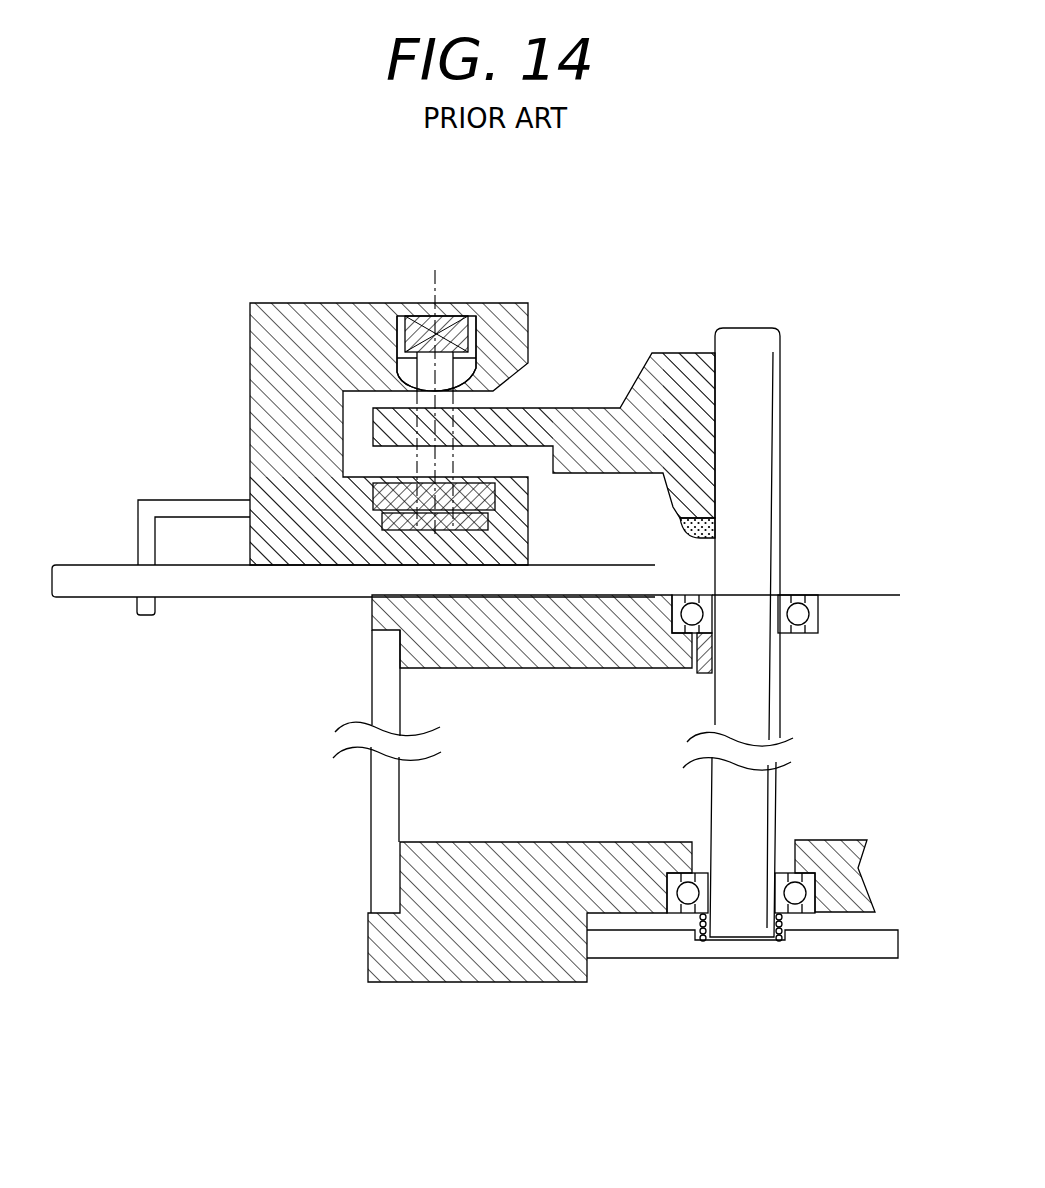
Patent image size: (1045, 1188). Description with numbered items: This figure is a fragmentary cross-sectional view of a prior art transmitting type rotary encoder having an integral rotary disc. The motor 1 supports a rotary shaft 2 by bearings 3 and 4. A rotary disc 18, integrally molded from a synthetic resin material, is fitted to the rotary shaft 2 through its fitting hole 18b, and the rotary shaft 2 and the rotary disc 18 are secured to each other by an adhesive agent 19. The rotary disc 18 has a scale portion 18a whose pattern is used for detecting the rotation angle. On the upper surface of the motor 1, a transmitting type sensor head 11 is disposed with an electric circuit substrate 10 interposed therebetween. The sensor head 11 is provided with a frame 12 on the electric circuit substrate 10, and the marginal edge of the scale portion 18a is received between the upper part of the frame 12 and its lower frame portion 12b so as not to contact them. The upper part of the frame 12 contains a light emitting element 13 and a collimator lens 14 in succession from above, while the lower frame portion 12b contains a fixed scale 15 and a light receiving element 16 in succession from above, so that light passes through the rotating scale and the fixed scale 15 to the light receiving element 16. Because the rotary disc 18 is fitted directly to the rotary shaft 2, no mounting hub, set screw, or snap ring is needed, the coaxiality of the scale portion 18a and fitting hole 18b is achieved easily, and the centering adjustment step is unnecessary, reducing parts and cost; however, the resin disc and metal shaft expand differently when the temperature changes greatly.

The motor 1 is at (366, 955).
The rotary shaft 2 is at (762, 345).
The bearing 3 is at (820, 621).
The bearing 4 is at (858, 888).
The electric circuit substrate 10 is at (90, 585).
The transmitting type sensor head 11 is at (387, 442).
The frame 12 is at (313, 301).
The lower frame portion 12b is at (507, 537).
The light emitting element 13 is at (460, 312).
The collimator lens 14 is at (460, 370).
The fixed scale 15 is at (370, 500).
The light receiving element 16 is at (387, 522).
The rotary disc 18 is at (464, 384).
The scale portion 18a is at (427, 422).
The fitting hole 18b is at (717, 382).
The adhesive agent 19 is at (718, 522).